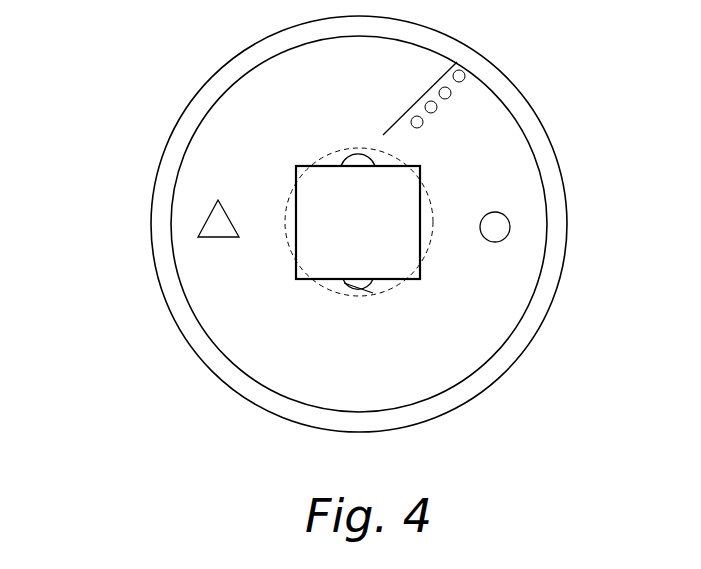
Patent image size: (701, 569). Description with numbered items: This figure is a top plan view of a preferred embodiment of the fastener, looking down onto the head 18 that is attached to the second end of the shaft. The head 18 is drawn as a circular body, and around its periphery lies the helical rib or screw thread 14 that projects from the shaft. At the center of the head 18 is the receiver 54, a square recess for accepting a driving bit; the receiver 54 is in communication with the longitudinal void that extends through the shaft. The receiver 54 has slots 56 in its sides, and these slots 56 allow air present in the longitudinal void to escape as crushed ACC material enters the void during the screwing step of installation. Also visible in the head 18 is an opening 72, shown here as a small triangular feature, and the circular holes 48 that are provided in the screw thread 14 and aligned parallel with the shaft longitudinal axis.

The screw thread 14 is at (533, 100).
The head 18 is at (212, 107).
The holes 48 is at (507, 228).
The receiver 54 is at (420, 272).
The slots 56 is at (373, 293).
The opening 72 is at (207, 227).